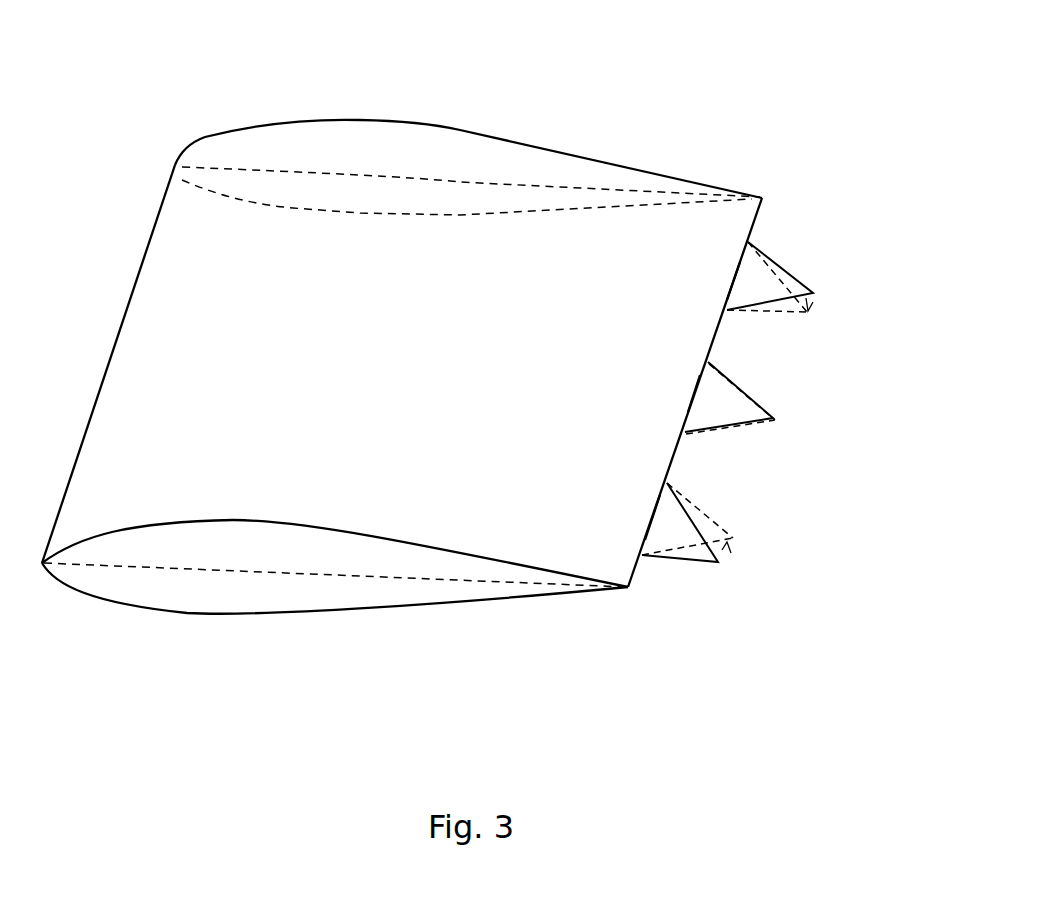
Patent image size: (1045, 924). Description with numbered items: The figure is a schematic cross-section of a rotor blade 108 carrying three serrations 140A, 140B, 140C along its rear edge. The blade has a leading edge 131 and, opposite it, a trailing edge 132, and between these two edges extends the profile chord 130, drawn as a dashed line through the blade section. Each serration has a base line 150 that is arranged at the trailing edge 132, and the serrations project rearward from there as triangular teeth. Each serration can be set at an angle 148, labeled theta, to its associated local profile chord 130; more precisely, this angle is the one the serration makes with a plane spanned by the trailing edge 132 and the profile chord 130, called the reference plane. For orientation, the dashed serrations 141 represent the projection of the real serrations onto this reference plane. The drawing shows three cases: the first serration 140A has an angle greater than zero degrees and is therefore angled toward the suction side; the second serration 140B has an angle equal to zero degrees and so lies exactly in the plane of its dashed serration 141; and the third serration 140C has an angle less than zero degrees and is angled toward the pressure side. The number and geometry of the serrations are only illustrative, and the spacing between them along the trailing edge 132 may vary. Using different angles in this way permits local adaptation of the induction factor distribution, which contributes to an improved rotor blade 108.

The rotor blade 108 is at (185, 215).
The profile chord 130 is at (410, 173).
The leading edge 131 is at (127, 308).
The trailing edge 132 is at (635, 572).
The serration 140A is at (767, 255).
The serration 140B is at (743, 392).
The serration 140C is at (703, 523).
The serration shown in dashed lines 141 is at (792, 313).
The angle 148 is at (818, 280).
The base line 150 is at (728, 295).